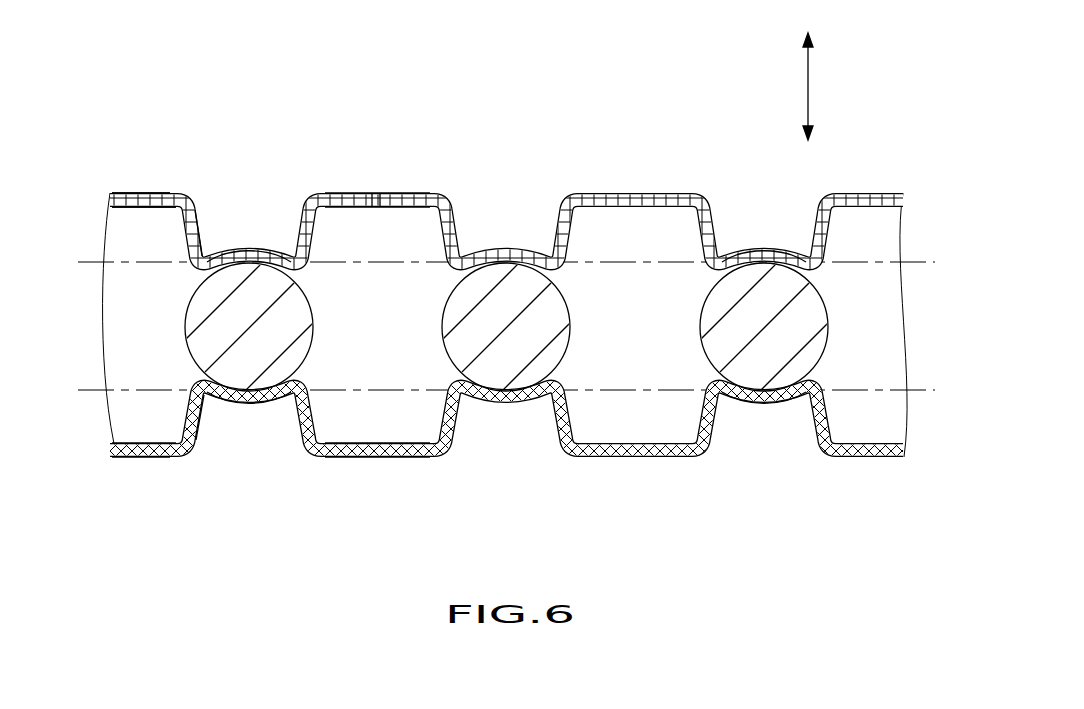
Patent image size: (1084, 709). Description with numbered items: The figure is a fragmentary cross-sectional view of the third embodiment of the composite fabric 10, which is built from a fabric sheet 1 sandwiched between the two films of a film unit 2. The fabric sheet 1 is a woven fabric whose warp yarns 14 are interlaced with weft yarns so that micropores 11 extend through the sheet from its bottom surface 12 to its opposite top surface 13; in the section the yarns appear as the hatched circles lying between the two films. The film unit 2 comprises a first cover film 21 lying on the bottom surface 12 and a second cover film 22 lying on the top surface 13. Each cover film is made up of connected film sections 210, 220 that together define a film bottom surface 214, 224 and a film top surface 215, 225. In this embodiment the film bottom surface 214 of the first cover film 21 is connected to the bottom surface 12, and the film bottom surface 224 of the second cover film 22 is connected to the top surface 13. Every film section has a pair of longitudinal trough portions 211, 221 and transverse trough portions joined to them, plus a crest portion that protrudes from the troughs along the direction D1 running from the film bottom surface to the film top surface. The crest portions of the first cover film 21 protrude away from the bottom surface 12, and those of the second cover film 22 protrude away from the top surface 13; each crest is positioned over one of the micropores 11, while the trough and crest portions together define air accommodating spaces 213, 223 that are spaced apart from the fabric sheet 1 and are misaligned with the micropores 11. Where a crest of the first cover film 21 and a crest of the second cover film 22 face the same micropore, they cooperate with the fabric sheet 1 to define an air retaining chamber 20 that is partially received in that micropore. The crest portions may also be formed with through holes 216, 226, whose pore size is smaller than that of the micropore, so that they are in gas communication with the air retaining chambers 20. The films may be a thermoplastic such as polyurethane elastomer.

The composite fabric 10 is at (233, 41).
The fabric sheet 1 is at (836, 313).
The micropores 11 is at (420, 309).
The bottom surface 12 is at (767, 395).
The top surface 13 is at (760, 265).
The warp yarns 14 is at (255, 335).
The film unit 2 is at (858, 186).
The air retaining chamber 20 is at (398, 244).
The first cover film 21 is at (165, 457).
The second cover film 22 is at (157, 194).
The film sections 210 is at (356, 509).
The longitudinal trough portions 211 is at (245, 405).
The air accommodating spaces 213 is at (214, 422).
The film bottom surface 214 is at (146, 443).
The film top surface 215 is at (140, 458).
The through holes 216 is at (368, 458).
The film sections 220 is at (331, 138).
The longitudinal trough portions 221 is at (249, 258).
The air accommodating spaces 223 is at (216, 225).
The film bottom surface 224 is at (142, 208).
The film top surface 225 is at (142, 194).
The through holes 226 is at (378, 196).
The direction D1 is at (829, 86).